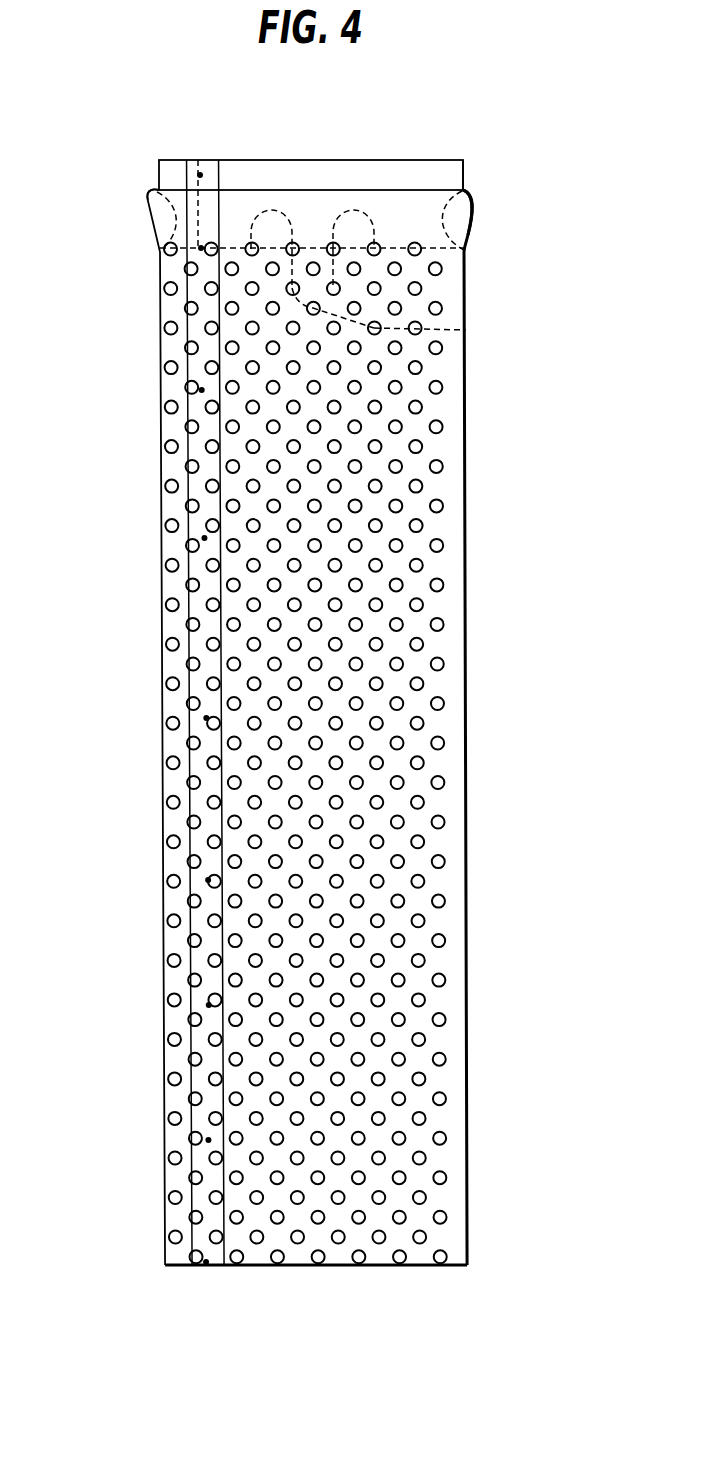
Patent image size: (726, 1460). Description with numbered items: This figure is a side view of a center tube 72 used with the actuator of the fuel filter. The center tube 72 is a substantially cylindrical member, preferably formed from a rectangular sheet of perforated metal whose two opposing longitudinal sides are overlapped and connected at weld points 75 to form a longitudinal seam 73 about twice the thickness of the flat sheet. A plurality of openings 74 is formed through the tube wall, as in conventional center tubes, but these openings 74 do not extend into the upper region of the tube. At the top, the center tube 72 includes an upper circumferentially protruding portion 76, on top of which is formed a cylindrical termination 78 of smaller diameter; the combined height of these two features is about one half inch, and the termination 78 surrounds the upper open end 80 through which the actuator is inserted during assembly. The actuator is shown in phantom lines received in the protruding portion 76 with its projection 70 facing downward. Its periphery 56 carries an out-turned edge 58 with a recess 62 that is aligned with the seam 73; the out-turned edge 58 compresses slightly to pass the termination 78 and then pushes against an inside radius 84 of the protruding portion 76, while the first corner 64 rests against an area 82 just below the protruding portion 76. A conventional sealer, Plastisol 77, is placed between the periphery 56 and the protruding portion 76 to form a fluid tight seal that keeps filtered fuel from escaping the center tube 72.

The periphery 56 is at (442, 204).
The out-turned edge 58 is at (482, 190).
The recess 62 is at (198, 160).
The first corner 64 is at (160, 248).
The projection 70 is at (466, 330).
The center tube 72 is at (82, 591).
The longitudinal seam 73 is at (195, 1082).
The openings 74 is at (440, 720).
The weld points 75 is at (199, 392).
The upper circumferentially protruding portion 76 is at (470, 218).
The Plastisol 77 is at (165, 214).
The cylindrical termination 78 is at (466, 172).
The upper open end 80 is at (316, 160).
The area 82 is at (464, 222).
The inside radius 84 is at (149, 197).